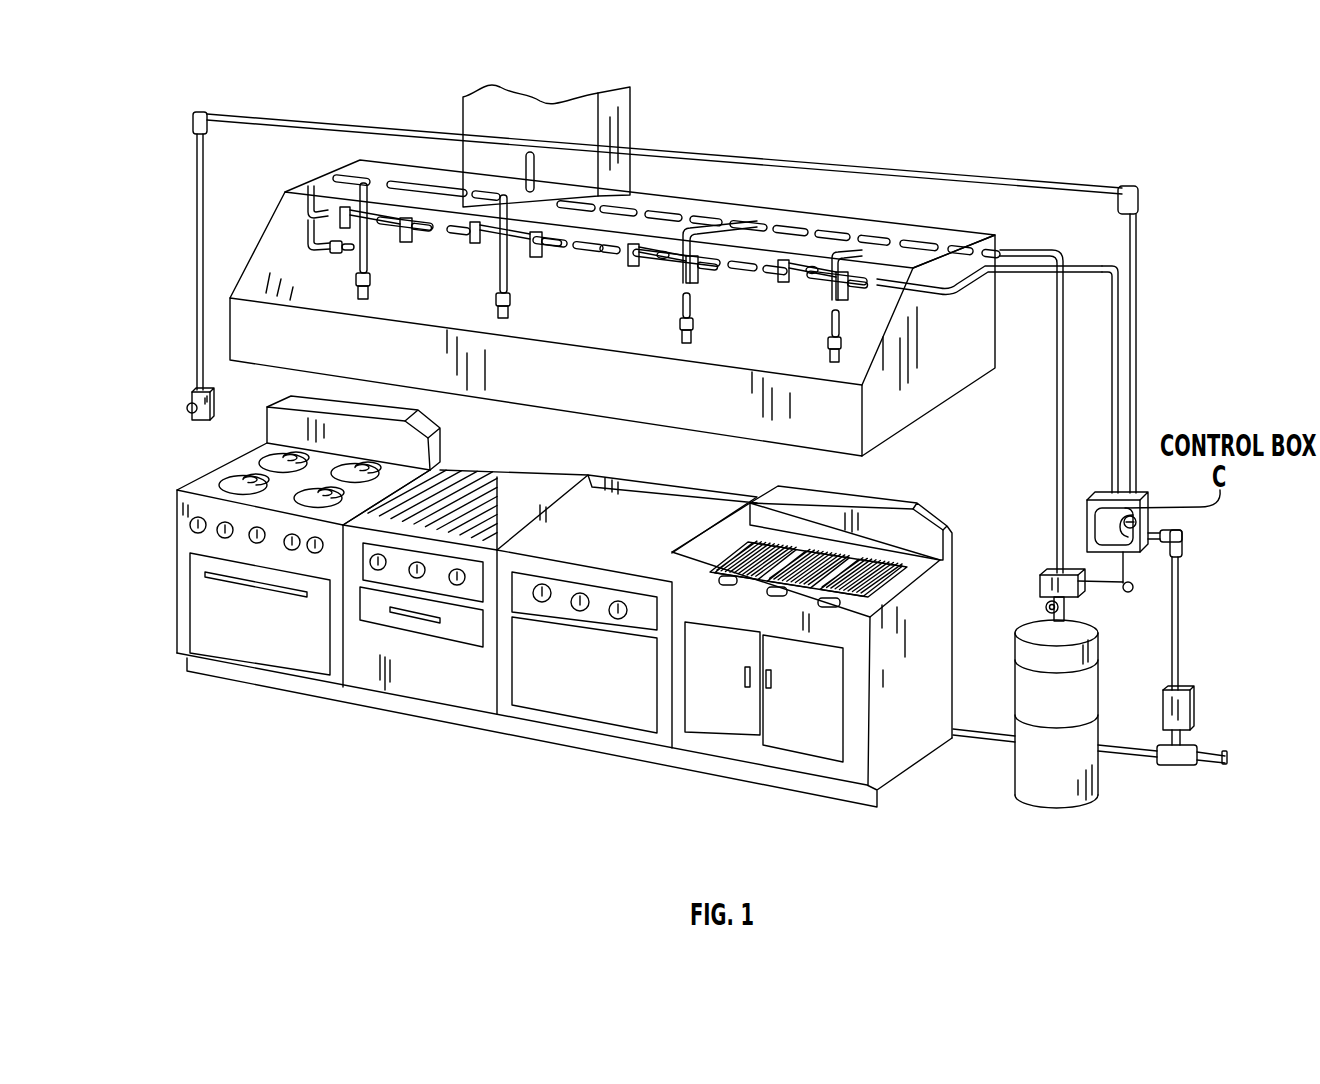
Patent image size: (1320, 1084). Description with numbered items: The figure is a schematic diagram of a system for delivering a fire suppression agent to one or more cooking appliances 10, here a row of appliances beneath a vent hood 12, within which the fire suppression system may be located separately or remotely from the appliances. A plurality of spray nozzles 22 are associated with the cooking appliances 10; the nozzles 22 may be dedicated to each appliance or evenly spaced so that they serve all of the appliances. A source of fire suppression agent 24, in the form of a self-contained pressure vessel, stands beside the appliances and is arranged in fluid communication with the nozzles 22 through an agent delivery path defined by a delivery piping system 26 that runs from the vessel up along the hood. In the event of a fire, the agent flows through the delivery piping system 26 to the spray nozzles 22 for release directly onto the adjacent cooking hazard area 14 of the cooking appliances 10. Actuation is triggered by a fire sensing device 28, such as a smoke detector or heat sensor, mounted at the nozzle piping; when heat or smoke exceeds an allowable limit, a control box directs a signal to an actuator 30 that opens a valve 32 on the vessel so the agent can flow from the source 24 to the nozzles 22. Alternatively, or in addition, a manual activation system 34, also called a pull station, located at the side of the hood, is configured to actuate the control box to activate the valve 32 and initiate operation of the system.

The cooking appliance 10 is at (533, 601).
The vent hood 12 is at (267, 262).
The cooking hazard area 14 is at (363, 545).
The spray nozzle 22 is at (503, 312).
The source of fire suppression agent 24 is at (1060, 788).
The delivery piping system 26 is at (1000, 252).
The fire sensing device 28 is at (817, 270).
The actuator 30 is at (1043, 593).
The valve 32 is at (1063, 607).
The manual activation system 34 is at (190, 397).